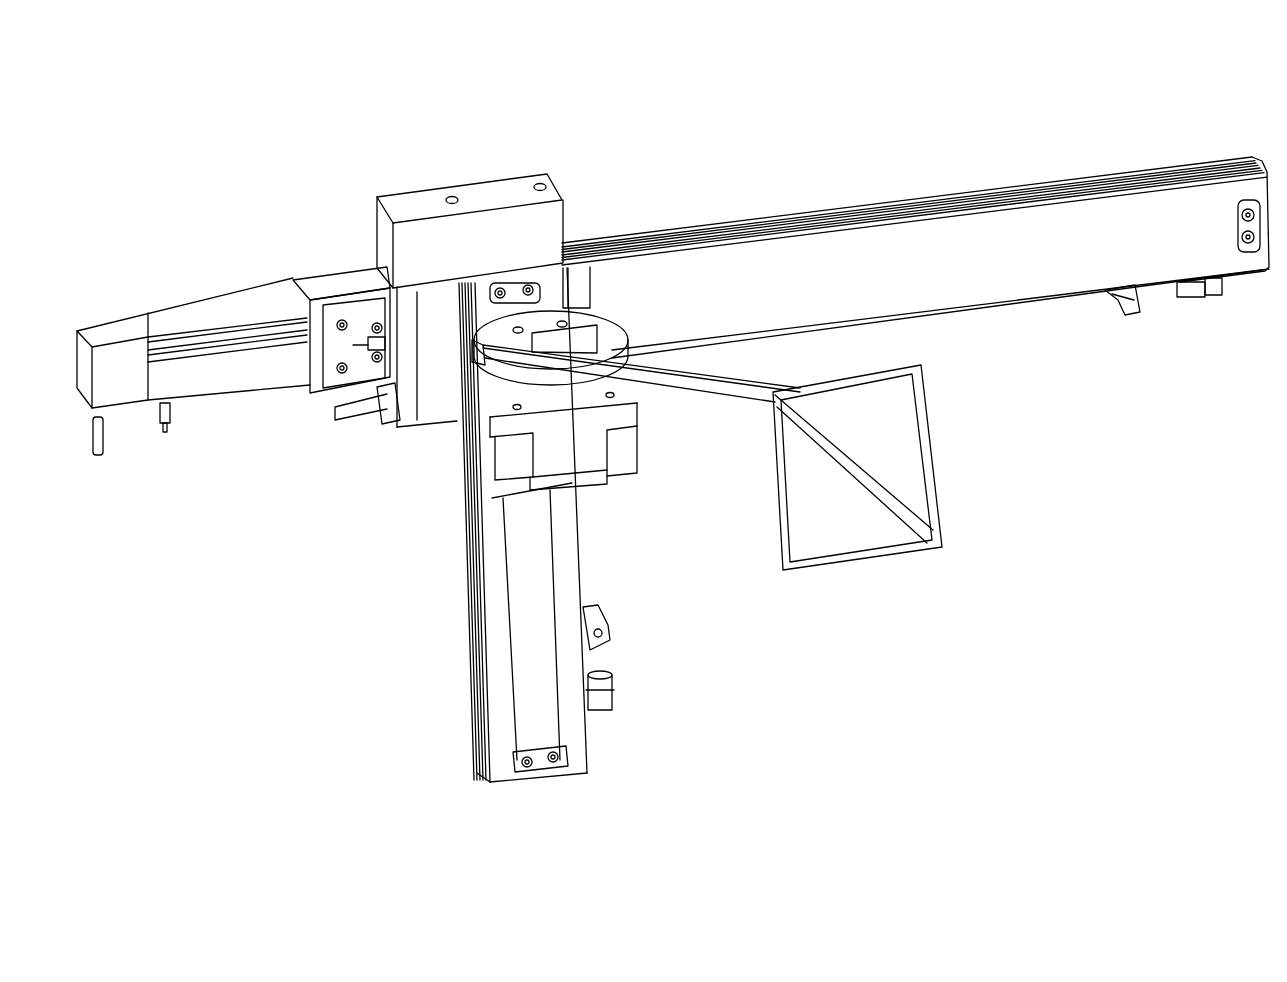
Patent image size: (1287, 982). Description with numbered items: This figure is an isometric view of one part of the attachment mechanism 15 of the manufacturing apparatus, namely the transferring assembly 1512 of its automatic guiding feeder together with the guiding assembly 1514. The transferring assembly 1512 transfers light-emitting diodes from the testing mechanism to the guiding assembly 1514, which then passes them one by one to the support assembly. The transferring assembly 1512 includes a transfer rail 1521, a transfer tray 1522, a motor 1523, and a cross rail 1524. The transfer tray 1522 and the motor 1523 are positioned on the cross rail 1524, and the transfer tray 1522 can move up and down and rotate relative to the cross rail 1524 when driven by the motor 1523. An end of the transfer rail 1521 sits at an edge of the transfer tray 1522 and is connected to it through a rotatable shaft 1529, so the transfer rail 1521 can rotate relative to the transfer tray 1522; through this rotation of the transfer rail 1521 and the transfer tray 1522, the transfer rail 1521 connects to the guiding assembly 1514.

The attachment mechanism 15 is at (438, 82).
The transferring assembly 1512 is at (905, 174).
The guiding assembly 1514 is at (880, 530).
The transfer rail 1521 is at (661, 369).
The transfer tray 1522 is at (611, 323).
The motor 1523 is at (545, 222).
The cross rail 1524 is at (767, 292).
The rotatable shaft 1529 is at (464, 362).